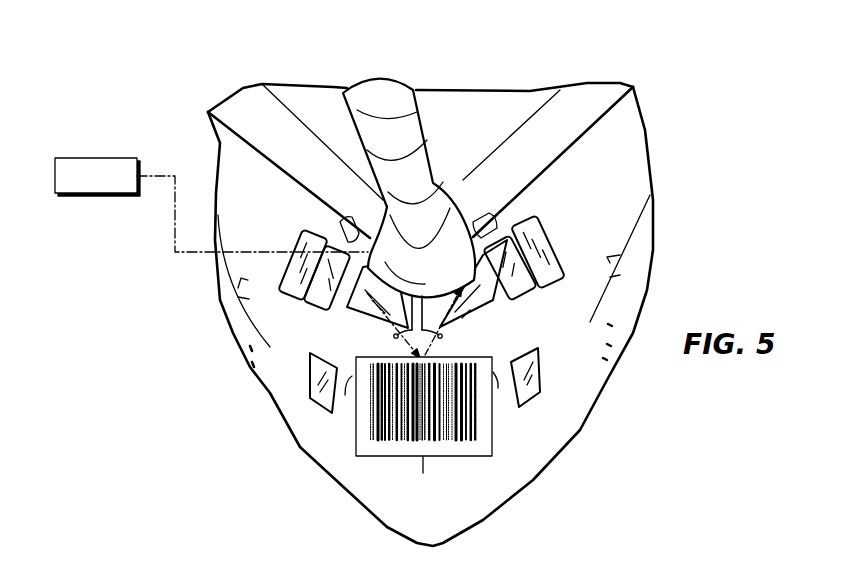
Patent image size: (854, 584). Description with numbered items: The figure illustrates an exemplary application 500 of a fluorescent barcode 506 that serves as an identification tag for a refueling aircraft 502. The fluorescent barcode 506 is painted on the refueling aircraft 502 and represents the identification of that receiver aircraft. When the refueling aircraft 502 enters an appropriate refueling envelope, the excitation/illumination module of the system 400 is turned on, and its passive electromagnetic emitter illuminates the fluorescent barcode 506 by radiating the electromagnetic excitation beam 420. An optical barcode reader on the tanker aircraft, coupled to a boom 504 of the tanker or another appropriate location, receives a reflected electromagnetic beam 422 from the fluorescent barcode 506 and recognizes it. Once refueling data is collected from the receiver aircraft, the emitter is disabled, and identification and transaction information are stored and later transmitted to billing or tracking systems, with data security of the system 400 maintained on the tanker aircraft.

The system 400 is at (72, 158).
The exemplary application of a fluorescent barcode 500 is at (645, 34).
The refueling aircraft 502 is at (433, 533).
The boom 504 is at (382, 88).
The electromagnetic excitation beam 420 is at (660, 293).
The reflected electromagnetic beam 422 is at (571, 311).
The fluorescent barcode 506 is at (353, 433).